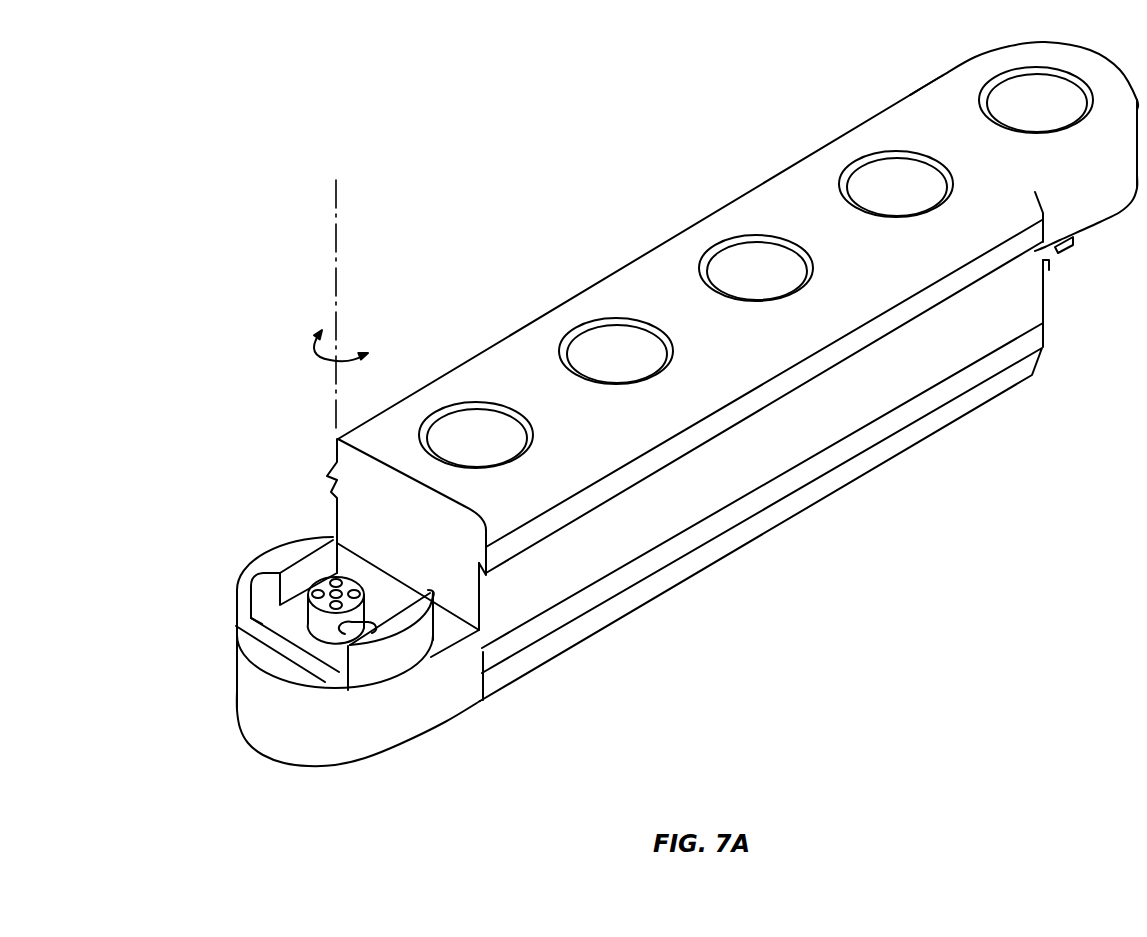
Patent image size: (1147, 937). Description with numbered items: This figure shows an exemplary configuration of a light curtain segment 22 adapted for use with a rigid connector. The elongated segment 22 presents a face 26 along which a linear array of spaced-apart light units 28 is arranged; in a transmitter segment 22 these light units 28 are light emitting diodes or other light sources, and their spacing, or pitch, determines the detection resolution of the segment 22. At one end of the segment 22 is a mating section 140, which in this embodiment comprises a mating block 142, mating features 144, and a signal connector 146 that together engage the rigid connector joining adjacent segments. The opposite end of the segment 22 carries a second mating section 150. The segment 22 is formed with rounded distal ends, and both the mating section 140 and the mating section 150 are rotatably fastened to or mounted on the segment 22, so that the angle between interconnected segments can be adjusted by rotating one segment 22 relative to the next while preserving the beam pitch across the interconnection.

The transmitter segment 22 is at (598, 562).
The face 26 is at (655, 285).
The light units 28 is at (474, 432).
The mating section 140 is at (263, 527).
The mating block 142 is at (256, 568).
The mating features 144 is at (266, 612).
The signal connector 146 is at (326, 625).
The mating section 150 is at (1071, 259).